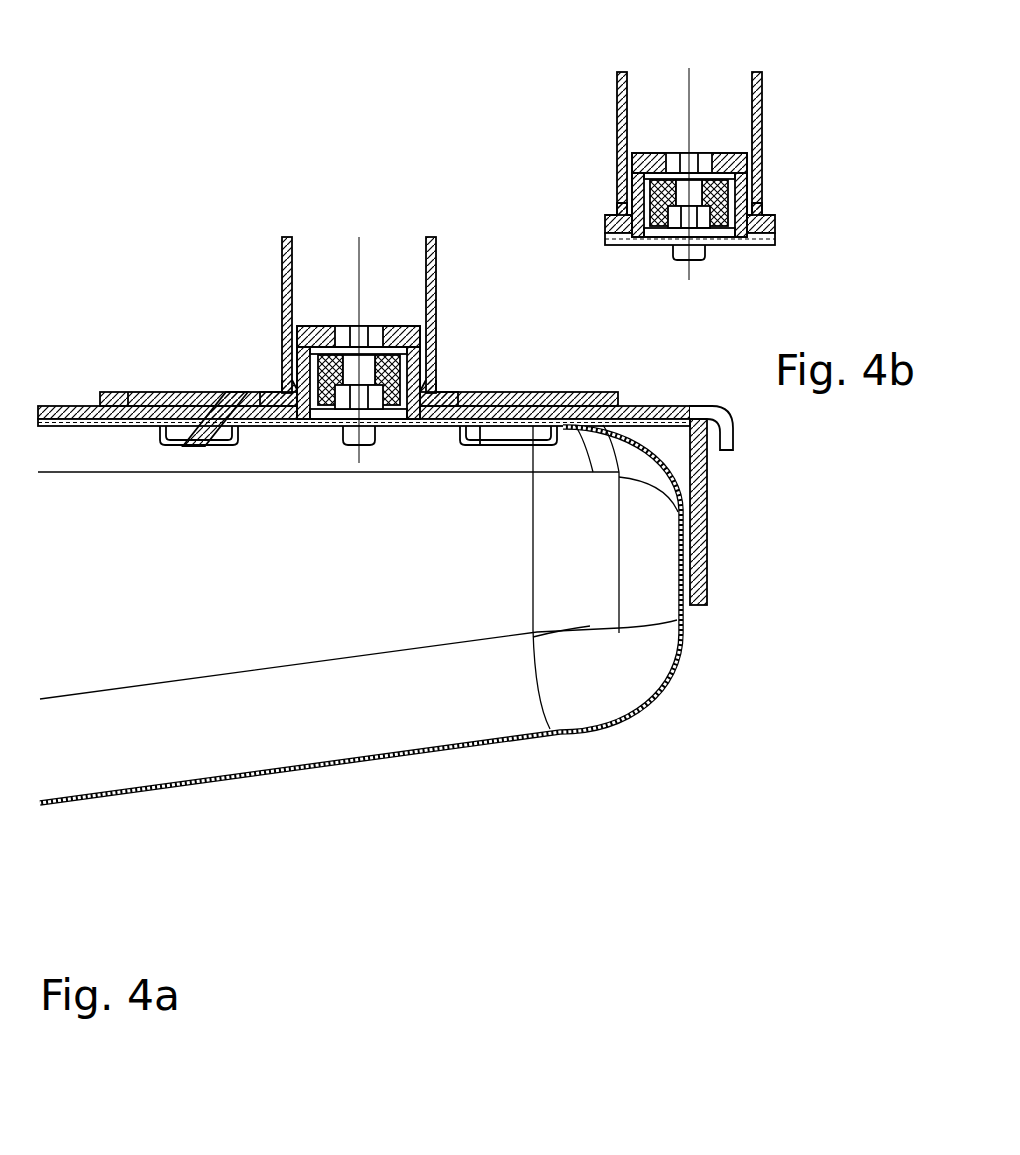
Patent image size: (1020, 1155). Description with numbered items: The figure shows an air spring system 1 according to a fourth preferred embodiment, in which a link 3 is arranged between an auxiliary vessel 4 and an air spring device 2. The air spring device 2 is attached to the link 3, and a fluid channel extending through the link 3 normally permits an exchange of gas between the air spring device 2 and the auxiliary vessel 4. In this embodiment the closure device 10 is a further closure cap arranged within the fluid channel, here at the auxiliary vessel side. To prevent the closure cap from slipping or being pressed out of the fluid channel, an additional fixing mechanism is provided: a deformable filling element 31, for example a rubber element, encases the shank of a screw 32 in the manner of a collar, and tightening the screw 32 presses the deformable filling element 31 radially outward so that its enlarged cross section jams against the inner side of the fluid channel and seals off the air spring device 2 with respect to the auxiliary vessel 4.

In FIG. 4A, the air spring system 1 is at (182, 170).
In FIG. 4A, the air spring device 2 is at (438, 263).
In FIG. 4B, the air spring device 2 is at (762, 78).
In FIG. 4A, the link 3 is at (692, 408).
In FIG. 4A, the auxiliary vessel 4 is at (660, 651).
In FIG. 4A, the deformable filling element 31 is at (440, 371).
In FIG. 4A, the screw 32 is at (378, 432).
In FIG. 4A, the closure device 10 is at (328, 443).
In FIG. 4B, the closure device 10 is at (717, 268).